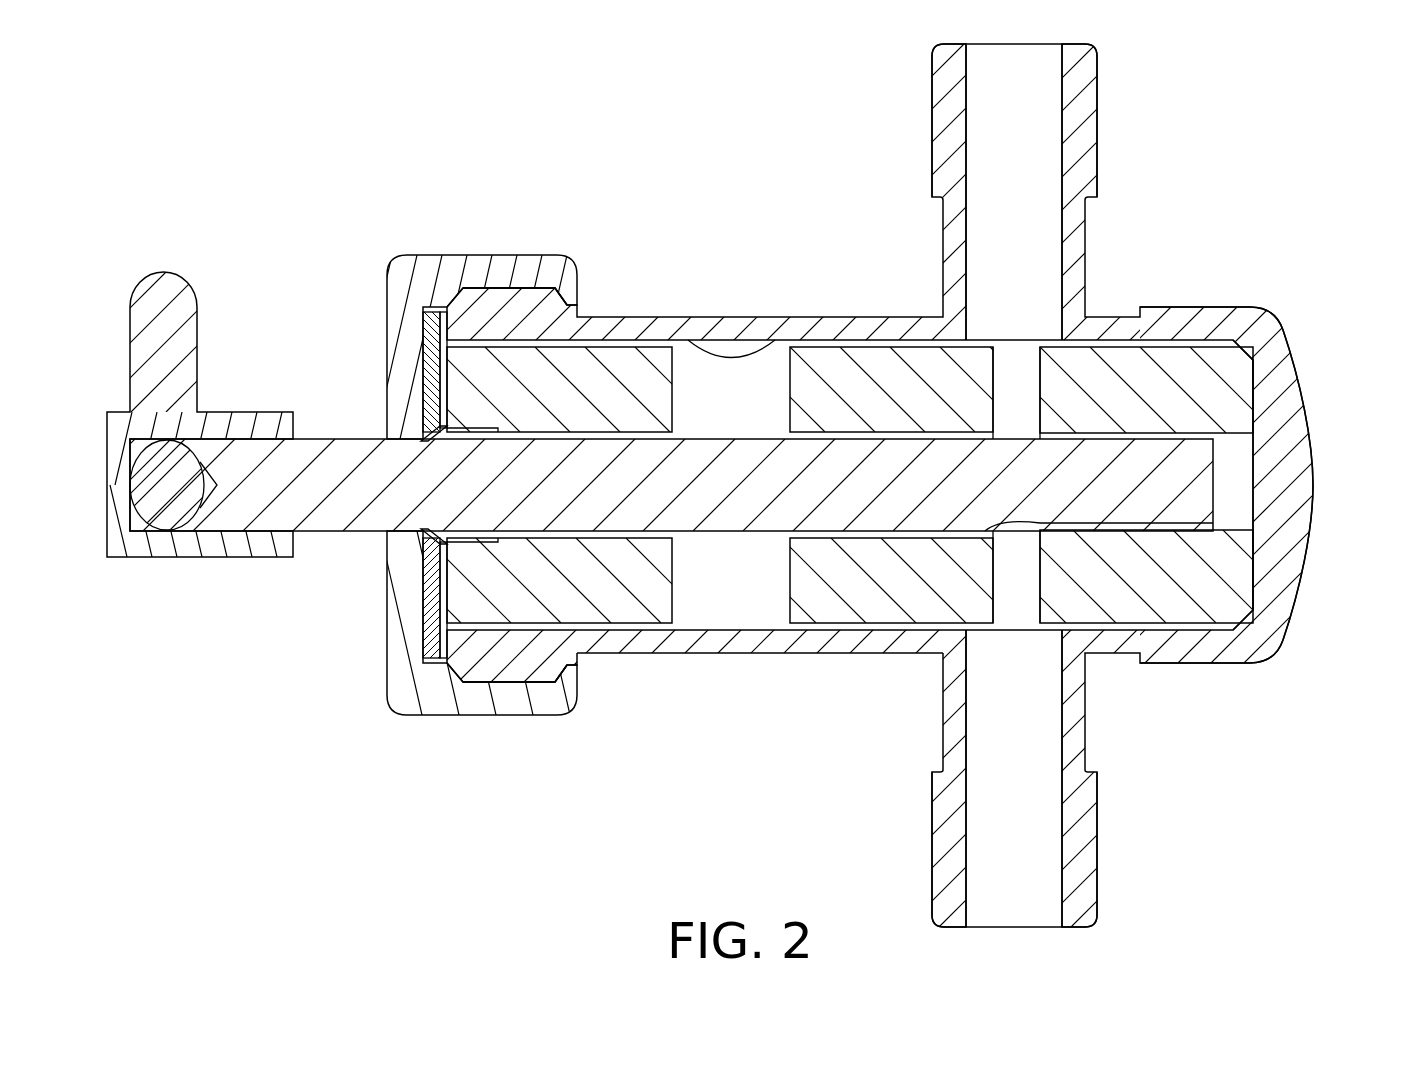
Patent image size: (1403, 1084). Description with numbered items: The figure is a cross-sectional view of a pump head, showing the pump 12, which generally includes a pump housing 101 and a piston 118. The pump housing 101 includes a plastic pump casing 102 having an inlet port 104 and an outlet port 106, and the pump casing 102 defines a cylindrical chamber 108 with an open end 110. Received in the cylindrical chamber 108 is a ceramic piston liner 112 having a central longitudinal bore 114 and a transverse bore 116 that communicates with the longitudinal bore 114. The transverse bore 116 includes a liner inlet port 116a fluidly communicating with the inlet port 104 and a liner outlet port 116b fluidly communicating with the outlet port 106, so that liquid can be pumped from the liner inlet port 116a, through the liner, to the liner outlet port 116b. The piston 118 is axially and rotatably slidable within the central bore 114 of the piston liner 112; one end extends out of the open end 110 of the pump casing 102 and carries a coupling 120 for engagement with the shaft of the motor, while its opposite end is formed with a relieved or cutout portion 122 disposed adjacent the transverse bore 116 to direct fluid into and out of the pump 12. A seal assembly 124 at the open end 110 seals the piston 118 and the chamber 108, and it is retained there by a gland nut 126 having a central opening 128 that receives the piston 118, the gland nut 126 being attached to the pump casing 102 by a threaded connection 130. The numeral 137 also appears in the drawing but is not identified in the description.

The pump 12 is at (390, 146).
The pump housing 101 is at (717, 640).
The pump casing 102 is at (700, 316).
The inlet port 104 is at (1100, 110).
The outlet port 106 is at (1100, 850).
The cylindrical chamber 108 is at (1195, 628).
The open end 110 is at (450, 587).
The ceramic piston liner 112 is at (628, 610).
The central longitudinal bore 114 is at (868, 528).
The transverse bore 116 is at (1040, 372).
The liner inlet port 116a is at (1018, 395).
The liner outlet port 116b is at (1020, 582).
The piston 118 is at (342, 455).
The coupling 120 is at (160, 557).
The relieved portion 122 is at (1163, 530).
The seal assembly 124 is at (425, 630).
The gland nut 126 is at (442, 254).
The central opening 128 is at (407, 534).
The threaded connection 130 is at (513, 676).
The retaining lip 137 is at (478, 427).